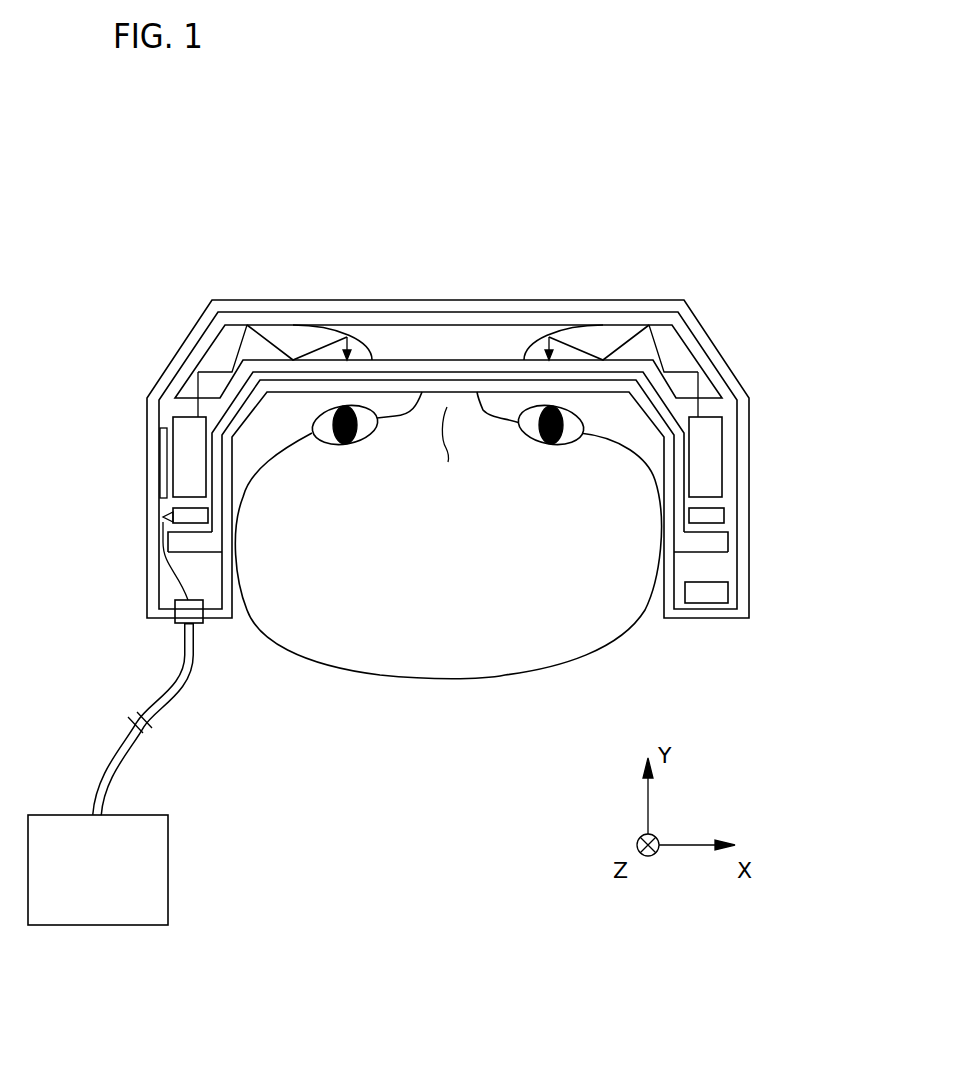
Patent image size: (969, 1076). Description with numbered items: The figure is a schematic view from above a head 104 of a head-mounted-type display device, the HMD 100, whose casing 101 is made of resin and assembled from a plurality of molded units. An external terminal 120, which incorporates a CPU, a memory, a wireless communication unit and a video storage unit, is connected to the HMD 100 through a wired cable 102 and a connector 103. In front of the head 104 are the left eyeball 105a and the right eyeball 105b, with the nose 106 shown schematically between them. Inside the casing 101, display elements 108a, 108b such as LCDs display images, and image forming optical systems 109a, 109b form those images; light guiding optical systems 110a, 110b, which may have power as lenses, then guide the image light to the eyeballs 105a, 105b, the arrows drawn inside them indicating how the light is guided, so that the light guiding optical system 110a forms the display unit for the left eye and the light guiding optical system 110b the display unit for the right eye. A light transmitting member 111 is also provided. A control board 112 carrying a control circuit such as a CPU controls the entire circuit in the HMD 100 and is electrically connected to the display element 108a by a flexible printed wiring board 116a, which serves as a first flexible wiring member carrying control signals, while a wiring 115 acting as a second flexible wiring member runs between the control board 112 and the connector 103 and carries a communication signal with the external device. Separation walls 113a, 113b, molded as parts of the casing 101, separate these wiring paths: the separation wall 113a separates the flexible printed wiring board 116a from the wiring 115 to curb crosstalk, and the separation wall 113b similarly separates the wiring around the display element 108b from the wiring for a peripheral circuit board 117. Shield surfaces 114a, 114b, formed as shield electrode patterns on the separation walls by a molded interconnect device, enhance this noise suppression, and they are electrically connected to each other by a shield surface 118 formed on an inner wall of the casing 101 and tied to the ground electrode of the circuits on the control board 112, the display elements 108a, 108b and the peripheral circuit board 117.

The HMD 100 is at (302, 138).
The casing 101 is at (750, 472).
The wired cable 102 is at (188, 685).
The connector 103 is at (203, 620).
The head 104 is at (505, 675).
The left eyeball 105a is at (370, 436).
The right eyeball 105b is at (560, 445).
The nose 106 is at (454, 451).
The display element 108a is at (208, 515).
The display element 108b is at (725, 517).
The image forming optical system 109a is at (177, 415).
The image forming optical system 109b is at (725, 447).
The light guiding optical system 110a is at (300, 323).
The light guiding optical system 110b is at (627, 325).
The light transmitting member 111 is at (480, 323).
The control board 112 is at (163, 455).
The separation wall 113a is at (193, 553).
The separation wall 113b is at (710, 553).
The shield surface 114a is at (172, 535).
The shield surface 114b is at (728, 537).
The wiring 115 is at (172, 575).
The flexible printed wiring board 116a is at (150, 527).
The peripheral circuit board 117 is at (732, 592).
The shield surface 118 is at (533, 372).
The external terminal 120 is at (170, 868).